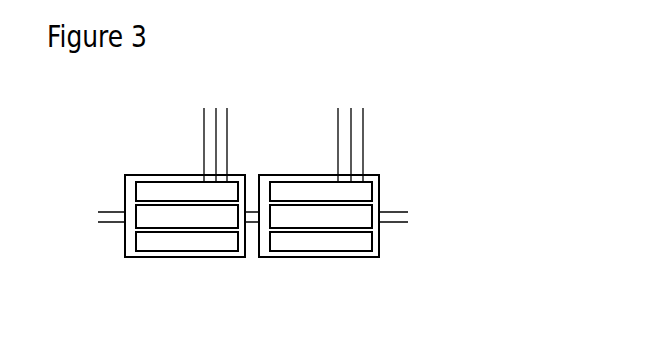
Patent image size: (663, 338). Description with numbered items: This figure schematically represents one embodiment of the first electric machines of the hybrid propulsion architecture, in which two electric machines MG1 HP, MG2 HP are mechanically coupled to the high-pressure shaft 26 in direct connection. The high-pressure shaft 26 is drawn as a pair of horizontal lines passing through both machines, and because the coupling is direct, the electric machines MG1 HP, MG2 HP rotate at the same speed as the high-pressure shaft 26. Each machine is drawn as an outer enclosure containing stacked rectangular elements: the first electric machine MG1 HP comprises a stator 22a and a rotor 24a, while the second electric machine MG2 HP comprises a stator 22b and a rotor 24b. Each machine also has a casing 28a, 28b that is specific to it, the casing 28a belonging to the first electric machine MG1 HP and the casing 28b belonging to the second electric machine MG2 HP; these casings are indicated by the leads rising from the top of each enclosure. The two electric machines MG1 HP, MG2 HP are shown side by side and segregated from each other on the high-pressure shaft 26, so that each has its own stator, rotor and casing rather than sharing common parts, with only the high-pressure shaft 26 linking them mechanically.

The first electric machine MG1 HP is at (143, 177).
The second electric machine MG2 HP is at (381, 178).
The stator 22a is at (158, 188).
The stator 22b is at (285, 190).
The rotor 24a is at (148, 218).
The rotor 24b is at (287, 243).
The high-pressure shaft 26 is at (103, 213).
The casing 28a is at (233, 175).
The casing 28b is at (333, 177).